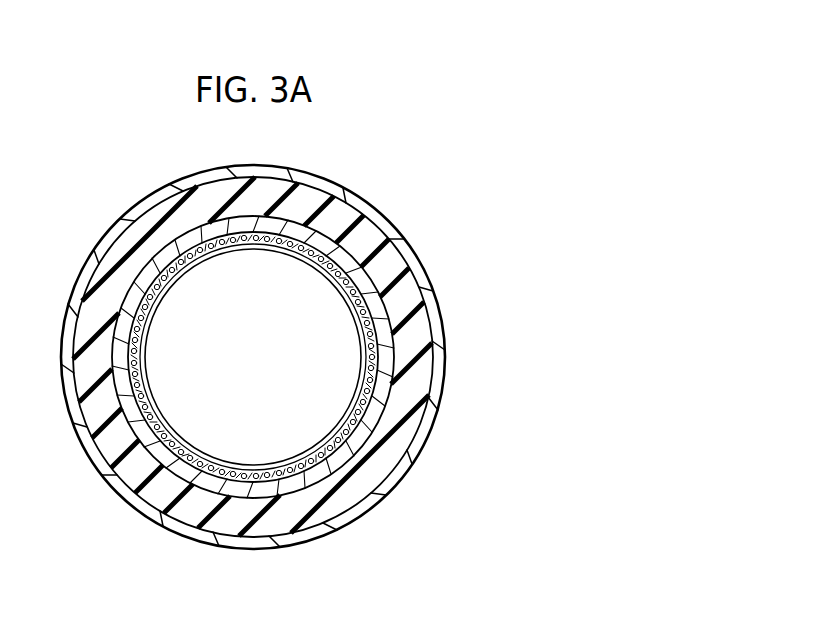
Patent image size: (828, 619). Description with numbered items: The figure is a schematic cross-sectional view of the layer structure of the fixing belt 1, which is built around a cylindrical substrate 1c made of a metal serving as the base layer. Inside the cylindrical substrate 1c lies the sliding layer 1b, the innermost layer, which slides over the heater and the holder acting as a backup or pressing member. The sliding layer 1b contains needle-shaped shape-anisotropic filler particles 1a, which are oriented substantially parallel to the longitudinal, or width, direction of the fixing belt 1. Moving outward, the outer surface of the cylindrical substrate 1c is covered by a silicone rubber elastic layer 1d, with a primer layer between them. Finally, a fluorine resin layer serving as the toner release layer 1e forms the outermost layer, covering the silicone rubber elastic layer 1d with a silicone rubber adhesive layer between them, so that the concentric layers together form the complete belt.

The fixing belt 1 is at (385, 184).
The shape-anisotropic filler particles 1a is at (355, 462).
The sliding layer 1b is at (343, 444).
The cylindrical substrate 1c is at (380, 388).
The silicone rubber elastic layer 1d is at (403, 290).
The toner release layer 1e is at (403, 250).